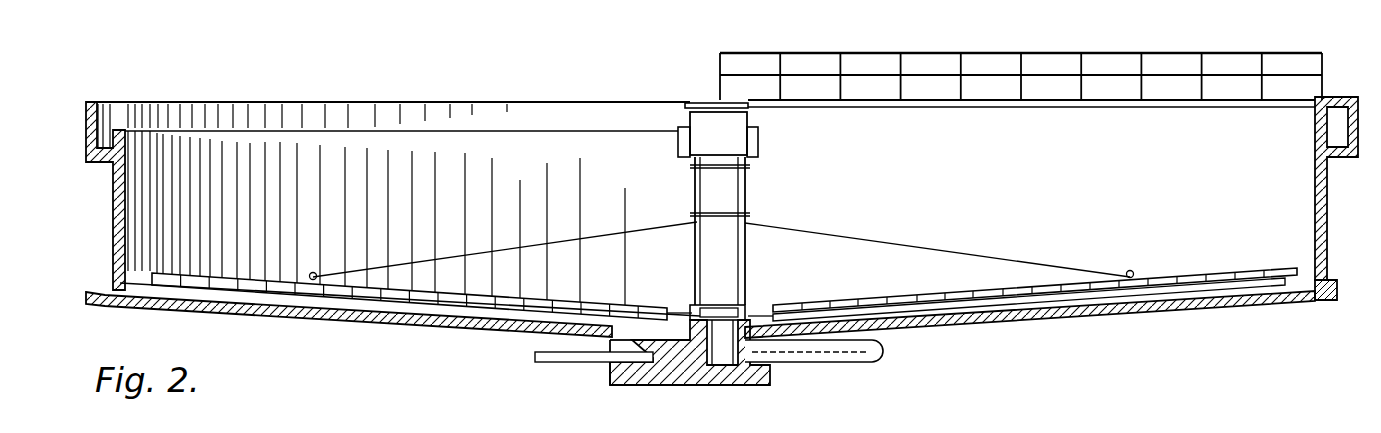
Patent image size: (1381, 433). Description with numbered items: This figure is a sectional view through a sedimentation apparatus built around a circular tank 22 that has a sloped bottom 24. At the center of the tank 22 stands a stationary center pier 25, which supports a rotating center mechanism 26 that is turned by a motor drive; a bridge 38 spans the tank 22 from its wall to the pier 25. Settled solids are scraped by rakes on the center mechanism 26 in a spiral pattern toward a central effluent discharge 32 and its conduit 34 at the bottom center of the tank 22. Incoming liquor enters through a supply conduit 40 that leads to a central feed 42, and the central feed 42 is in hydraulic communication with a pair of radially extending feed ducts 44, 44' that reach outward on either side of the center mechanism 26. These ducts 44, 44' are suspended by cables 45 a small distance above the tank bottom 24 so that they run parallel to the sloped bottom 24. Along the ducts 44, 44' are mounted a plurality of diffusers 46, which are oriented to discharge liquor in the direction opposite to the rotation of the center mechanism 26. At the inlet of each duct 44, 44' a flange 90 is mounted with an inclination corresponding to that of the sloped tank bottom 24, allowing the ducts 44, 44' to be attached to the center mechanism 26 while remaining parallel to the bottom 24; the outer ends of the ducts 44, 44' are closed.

The circular tank 22 is at (175, 102).
The sloped bottom 24 is at (445, 316).
The stationary center pier 25 is at (698, 104).
The rotating center mechanism 26 is at (759, 192).
The central effluent discharge 32 is at (670, 340).
The conduit 34 is at (570, 360).
The bridge 38 is at (1000, 110).
The supply conduit 40 is at (863, 355).
The central feed 42 is at (728, 350).
The feed duct 44 is at (422, 296).
The feed duct 44' is at (1035, 313).
The cables 45 is at (593, 233).
The diffusers 46 is at (224, 305).
The flange 90 is at (693, 305).